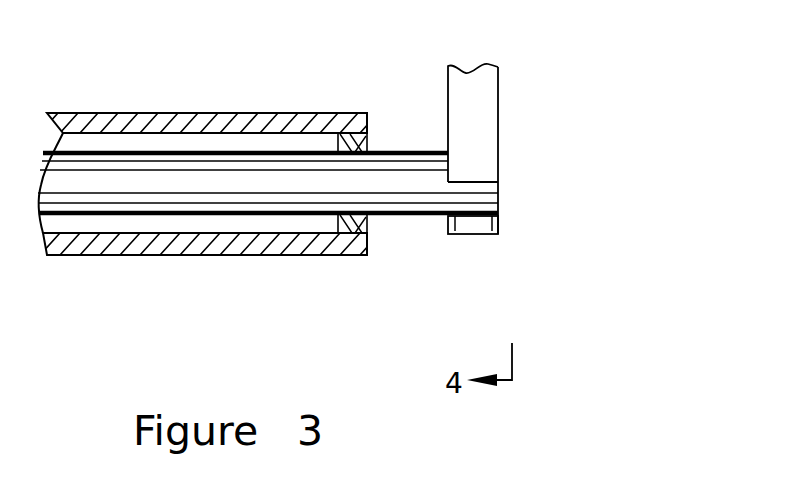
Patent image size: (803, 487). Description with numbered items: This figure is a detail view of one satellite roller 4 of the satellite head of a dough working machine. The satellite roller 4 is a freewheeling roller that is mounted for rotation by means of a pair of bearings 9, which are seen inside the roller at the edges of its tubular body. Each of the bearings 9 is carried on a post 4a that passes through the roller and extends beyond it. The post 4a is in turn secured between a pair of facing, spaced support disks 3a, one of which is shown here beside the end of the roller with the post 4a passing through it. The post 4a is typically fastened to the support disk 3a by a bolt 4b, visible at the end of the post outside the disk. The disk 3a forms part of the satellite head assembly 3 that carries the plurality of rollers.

The connector body 3 is at (577, 141).
The support disk 3a is at (498, 107).
The satellite roller 4 is at (128, 113).
The post 4a is at (397, 215).
The bolt 4b is at (470, 234).
The bearing 9 is at (368, 142).